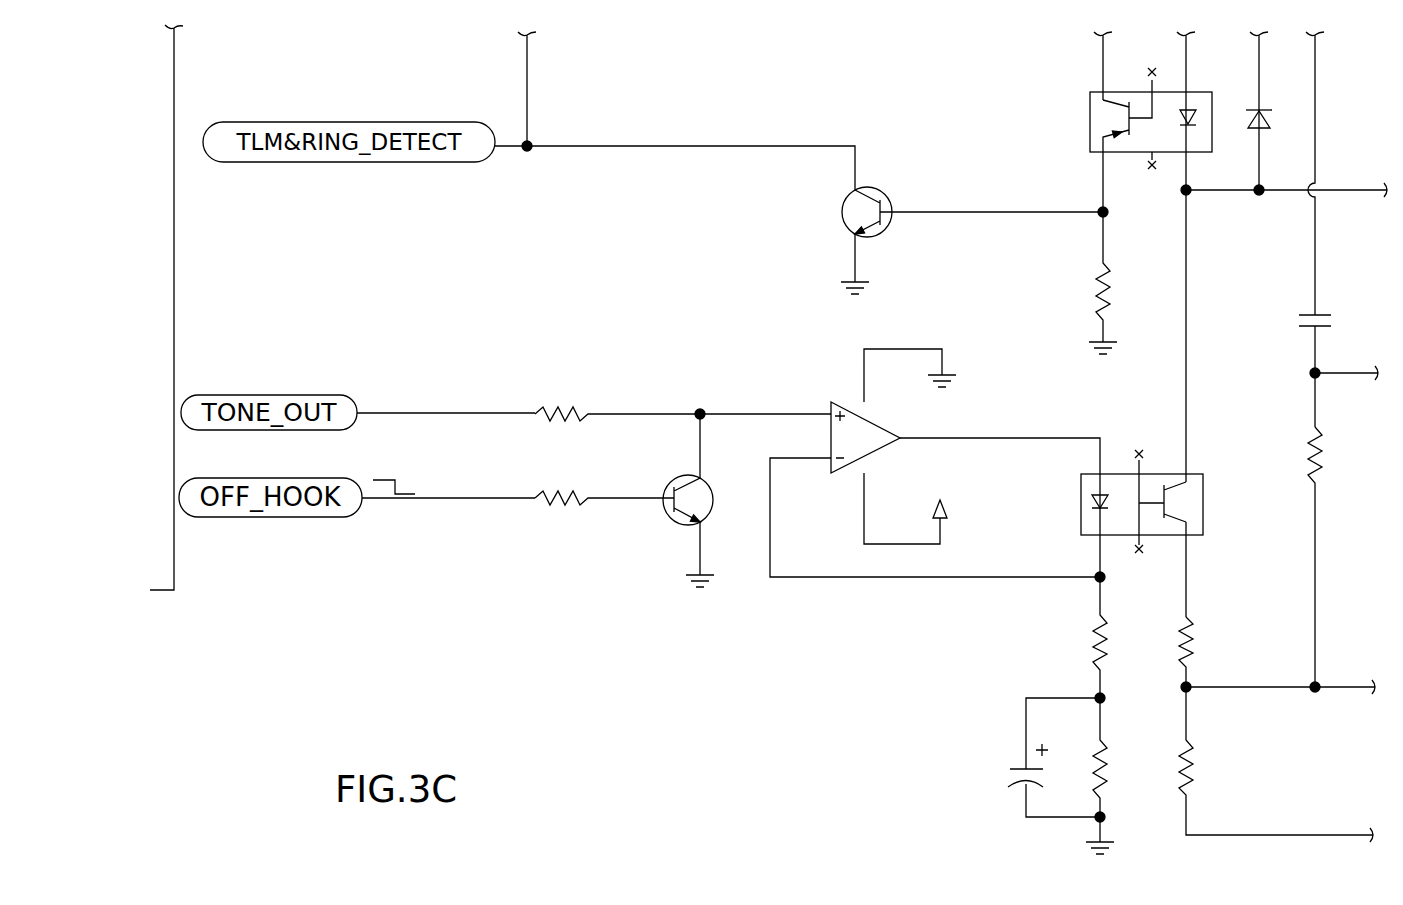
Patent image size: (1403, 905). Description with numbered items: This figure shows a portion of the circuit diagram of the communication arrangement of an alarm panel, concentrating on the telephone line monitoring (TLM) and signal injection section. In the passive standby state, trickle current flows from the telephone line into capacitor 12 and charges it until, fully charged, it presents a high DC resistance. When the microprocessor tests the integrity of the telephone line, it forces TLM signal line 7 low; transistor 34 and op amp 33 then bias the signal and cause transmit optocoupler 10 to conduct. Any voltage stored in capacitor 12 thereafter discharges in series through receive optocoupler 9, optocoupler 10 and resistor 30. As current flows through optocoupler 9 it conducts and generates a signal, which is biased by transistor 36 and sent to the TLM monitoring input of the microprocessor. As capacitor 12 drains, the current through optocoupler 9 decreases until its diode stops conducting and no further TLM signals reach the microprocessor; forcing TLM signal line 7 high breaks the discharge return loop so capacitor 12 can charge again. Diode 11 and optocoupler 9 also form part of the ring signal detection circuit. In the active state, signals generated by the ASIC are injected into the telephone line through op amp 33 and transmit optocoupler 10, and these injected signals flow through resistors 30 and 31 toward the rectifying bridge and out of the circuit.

The TLM signal line 7 is at (476, 499).
The optocoupler 9 is at (1086, 111).
The optocoupler 10 is at (1208, 509).
The diode 11 is at (1277, 110).
The capacitor 12 is at (1296, 320).
The resistor 30 is at (1198, 650).
The resistor 31 is at (1194, 777).
The op amp 33 is at (872, 416).
The transistor 34 is at (663, 505).
The transistor 36 is at (874, 187).